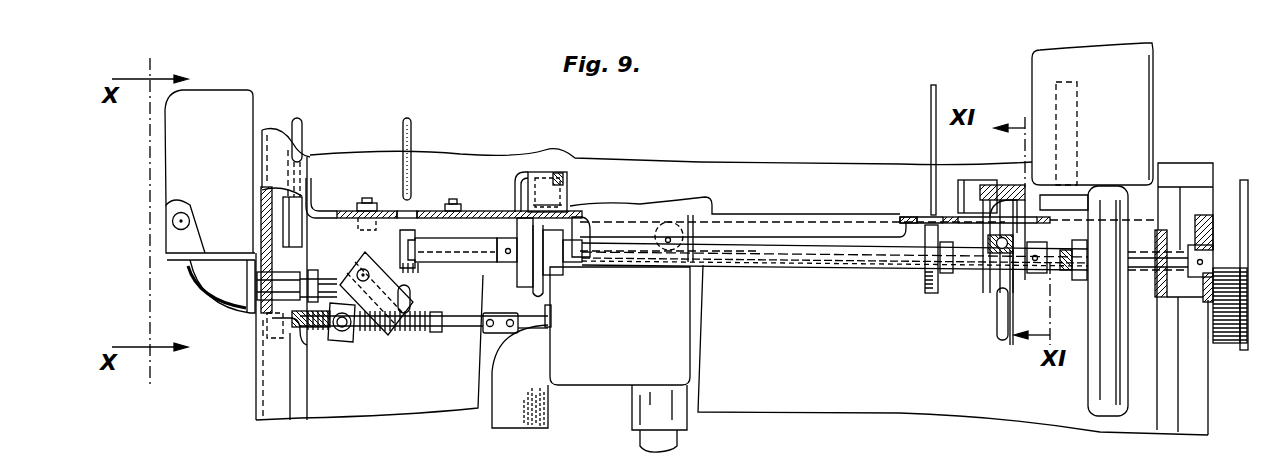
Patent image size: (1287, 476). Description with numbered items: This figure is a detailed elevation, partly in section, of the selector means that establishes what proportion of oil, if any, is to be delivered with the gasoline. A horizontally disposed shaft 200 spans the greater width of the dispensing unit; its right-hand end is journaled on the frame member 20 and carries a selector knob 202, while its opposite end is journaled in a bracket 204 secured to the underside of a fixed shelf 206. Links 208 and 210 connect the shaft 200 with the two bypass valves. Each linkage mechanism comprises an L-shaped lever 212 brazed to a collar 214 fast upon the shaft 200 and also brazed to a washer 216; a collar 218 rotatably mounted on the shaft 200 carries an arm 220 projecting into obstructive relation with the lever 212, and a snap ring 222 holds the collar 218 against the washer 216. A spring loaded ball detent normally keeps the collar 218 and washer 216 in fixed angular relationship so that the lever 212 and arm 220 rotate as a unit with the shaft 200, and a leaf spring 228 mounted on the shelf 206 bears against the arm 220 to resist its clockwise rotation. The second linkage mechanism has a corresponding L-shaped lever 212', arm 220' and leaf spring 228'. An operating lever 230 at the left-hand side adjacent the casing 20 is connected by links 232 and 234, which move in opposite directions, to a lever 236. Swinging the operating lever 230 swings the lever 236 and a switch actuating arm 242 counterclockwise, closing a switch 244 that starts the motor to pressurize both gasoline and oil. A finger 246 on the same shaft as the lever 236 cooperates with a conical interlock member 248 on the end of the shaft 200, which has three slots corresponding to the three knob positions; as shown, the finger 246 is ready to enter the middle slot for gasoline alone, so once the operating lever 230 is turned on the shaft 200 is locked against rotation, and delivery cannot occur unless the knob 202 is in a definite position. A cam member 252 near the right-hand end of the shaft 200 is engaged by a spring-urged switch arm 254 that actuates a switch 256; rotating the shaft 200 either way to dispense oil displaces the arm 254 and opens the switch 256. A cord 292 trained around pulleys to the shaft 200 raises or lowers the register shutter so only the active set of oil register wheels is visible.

The frame member 20 is at (257, 390).
The shaft 200 is at (785, 268).
The selector knob 202 is at (1257, 160).
The bracket 204 is at (492, 211).
The fixed shelf 206 is at (775, 216).
The link 208 is at (553, 288).
The link 210 is at (1000, 337).
The L-shaped lever 212 is at (1078, 133).
The L-shaped lever 212' is at (545, 165).
The collar 214 is at (1032, 278).
The washer 216 is at (1011, 345).
The collar 218 is at (993, 290).
The arm 220 is at (901, 204).
The arm 220' is at (599, 189).
The snap ring 222 is at (977, 279).
The leaf spring 228 is at (989, 211).
The leaf spring 228' is at (585, 186).
The operating lever 230 is at (256, 100).
The link 232 is at (303, 125).
The link 234 is at (412, 122).
The lever 236 is at (405, 314).
The switch actuating arm 242 is at (350, 342).
The switch 244 is at (637, 328).
The finger 246 is at (388, 335).
The interlock member 248 is at (412, 278).
The cam member 252 is at (1082, 285).
The switch arm 254 is at (1075, 197).
The switch 256 is at (1153, 100).
The cord 292 is at (930, 137).